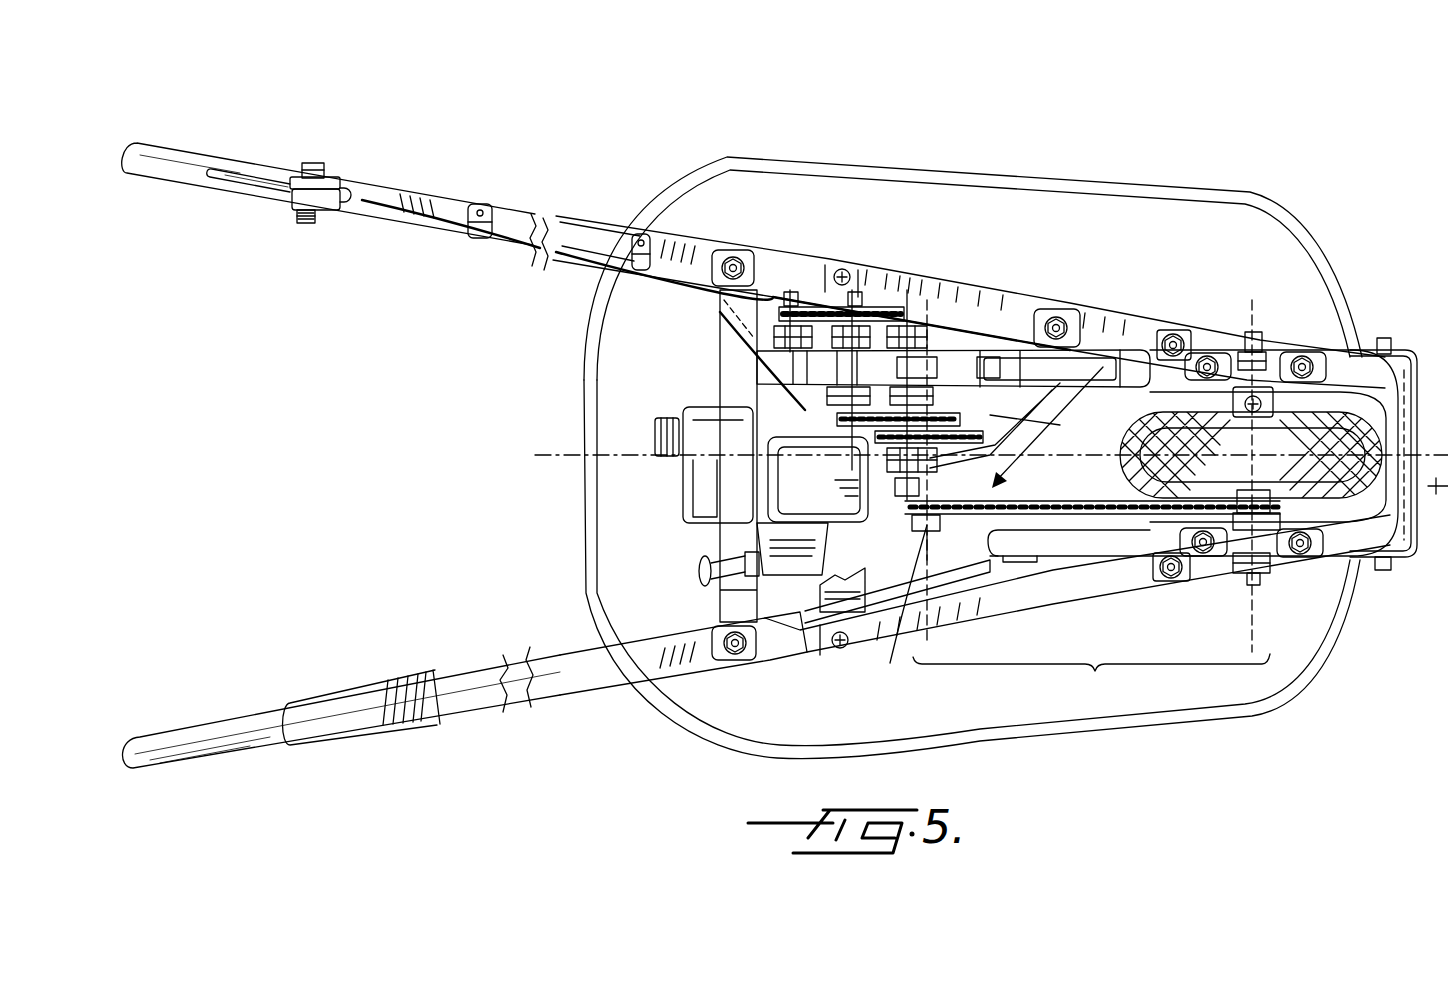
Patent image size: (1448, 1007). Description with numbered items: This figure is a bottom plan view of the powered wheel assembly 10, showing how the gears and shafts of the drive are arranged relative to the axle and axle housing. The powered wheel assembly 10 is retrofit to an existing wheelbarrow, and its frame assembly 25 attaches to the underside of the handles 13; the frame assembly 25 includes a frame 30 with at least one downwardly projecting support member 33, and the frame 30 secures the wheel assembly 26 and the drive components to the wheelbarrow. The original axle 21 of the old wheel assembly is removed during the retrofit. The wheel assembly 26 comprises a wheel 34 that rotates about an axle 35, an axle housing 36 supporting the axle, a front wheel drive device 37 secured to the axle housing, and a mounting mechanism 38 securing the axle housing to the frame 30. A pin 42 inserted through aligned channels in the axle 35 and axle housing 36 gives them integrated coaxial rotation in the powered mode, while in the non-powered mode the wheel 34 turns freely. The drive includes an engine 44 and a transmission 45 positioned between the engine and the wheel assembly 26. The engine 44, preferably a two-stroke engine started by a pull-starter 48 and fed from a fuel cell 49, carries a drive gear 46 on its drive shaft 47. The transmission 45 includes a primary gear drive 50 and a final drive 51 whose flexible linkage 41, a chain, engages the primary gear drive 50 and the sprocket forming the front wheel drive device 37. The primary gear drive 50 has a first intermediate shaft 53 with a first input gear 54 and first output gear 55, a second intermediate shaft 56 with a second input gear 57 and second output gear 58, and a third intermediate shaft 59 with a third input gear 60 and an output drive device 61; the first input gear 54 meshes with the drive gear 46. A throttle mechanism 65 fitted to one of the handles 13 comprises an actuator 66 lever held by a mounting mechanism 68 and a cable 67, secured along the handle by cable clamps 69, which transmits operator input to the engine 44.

The powered wheel assembly 10 is at (742, 233).
The handles 13 is at (443, 200).
The axle 21 is at (770, 590).
The frame assembly 25 is at (1103, 332).
The wheel assembly 26 is at (1333, 515).
The frame 30 is at (1116, 540).
The support member 33 is at (967, 293).
The wheel 34 is at (1410, 367).
The axle 35 is at (1263, 327).
The axle housing 36 is at (1325, 388).
The front wheel drive device 37 is at (1273, 560).
The mounting mechanism 38 is at (1233, 347).
The flexible linkage 41 is at (1090, 503).
The pin 42 is at (1237, 403).
The engine 44 is at (770, 500).
The transmission 45 is at (1000, 414).
The drive gear 46 is at (787, 300).
The drive shaft 47 is at (793, 300).
The pull-starter 48 is at (703, 577).
The fuel cell 49 is at (700, 455).
The primary gear drive 50 is at (752, 314).
The final drive 51 is at (1091, 681).
The first intermediate shaft 53 is at (848, 305).
The first input gear 54 is at (882, 305).
The first output gear 55 is at (835, 425).
The second intermediate shaft 56 is at (966, 460).
The second input gear 57 is at (980, 352).
The second output gear 58 is at (915, 500).
The third intermediate shaft 59 is at (901, 611).
The third input gear 60 is at (1045, 316).
The output drive device 61 is at (915, 600).
The throttle mechanism 65 is at (350, 160).
The actuator 66 is at (247, 177).
The cable 67 is at (380, 227).
The mounting mechanism 68 is at (297, 210).
The cable clamps 69 is at (477, 247).